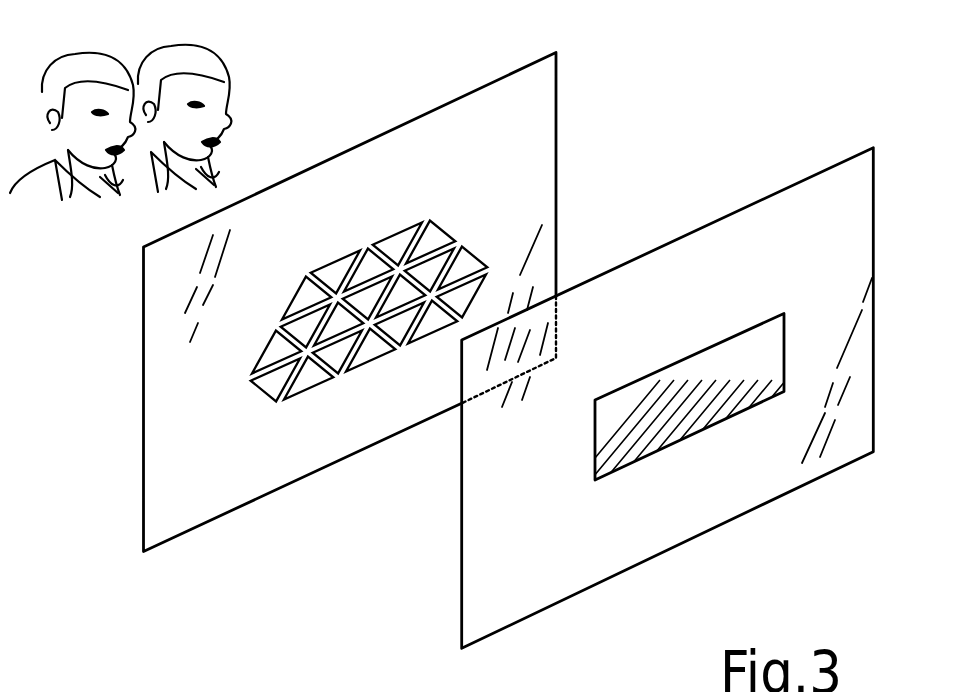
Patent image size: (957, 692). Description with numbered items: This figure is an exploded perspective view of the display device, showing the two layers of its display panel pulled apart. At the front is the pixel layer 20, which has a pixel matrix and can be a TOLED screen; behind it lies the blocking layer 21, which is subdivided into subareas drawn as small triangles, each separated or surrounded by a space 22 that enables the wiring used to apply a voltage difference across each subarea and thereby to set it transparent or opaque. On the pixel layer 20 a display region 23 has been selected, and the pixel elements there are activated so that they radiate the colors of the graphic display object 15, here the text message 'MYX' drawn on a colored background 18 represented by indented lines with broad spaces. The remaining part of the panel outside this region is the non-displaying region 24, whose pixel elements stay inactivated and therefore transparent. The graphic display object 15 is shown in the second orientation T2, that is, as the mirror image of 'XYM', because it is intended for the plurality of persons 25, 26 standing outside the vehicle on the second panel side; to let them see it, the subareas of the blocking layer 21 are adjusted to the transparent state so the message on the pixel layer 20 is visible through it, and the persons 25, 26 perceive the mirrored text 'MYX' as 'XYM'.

The graphic display object 15 is at (638, 465).
The colored background 18 is at (729, 406).
The pixel layer 20 is at (783, 212).
The blocking layer 21 is at (540, 98).
The space 22 is at (418, 223).
The display region 23 is at (731, 426).
The non-displaying region 24 is at (576, 543).
The person 25 is at (107, 63).
The person 26 is at (200, 58).
The second orientation T2 is at (764, 364).